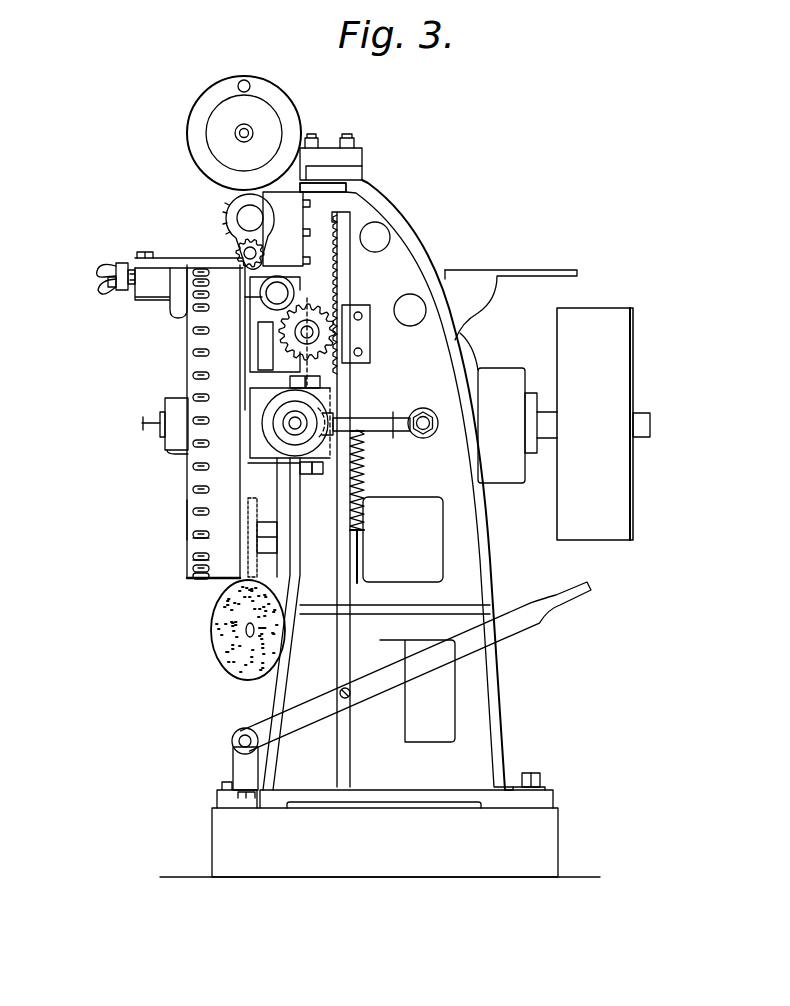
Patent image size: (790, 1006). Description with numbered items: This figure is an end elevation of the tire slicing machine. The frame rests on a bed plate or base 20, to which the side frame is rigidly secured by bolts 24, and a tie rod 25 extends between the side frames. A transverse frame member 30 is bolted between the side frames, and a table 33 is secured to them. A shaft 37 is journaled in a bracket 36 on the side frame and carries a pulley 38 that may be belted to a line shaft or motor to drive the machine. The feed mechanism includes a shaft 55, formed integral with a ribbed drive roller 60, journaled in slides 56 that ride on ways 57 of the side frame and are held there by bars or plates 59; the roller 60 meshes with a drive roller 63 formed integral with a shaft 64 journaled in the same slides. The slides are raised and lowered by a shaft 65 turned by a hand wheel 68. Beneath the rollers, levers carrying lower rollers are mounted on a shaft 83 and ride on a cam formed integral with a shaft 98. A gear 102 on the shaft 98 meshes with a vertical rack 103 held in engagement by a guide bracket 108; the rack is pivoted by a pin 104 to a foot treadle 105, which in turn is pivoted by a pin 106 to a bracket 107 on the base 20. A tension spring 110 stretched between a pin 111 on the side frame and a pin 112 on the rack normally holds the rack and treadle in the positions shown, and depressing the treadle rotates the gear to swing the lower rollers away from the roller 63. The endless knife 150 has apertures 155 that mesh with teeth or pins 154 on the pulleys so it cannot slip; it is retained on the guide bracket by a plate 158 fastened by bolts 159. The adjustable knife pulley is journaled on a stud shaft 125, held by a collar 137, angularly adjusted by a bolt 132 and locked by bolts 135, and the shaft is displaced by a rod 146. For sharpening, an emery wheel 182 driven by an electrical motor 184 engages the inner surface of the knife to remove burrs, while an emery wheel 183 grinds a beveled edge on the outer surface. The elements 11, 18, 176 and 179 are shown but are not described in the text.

The base 20 is at (413, 858).
The bolts 24 is at (528, 773).
The bracket 107 is at (242, 760).
The pin 106 is at (245, 728).
The foot treadle 105 is at (427, 657).
The pin 104 is at (340, 690).
The emery wheel 183 is at (214, 638).
The apertures 155 is at (195, 327).
The knife 150 is at (187, 518).
The teeth or pins 154 is at (202, 557).
The plate 158 is at (170, 257).
The bolts 159 is at (146, 253).
The nut 176 is at (124, 264).
The wing screw 18 is at (108, 270).
The screw shank 179 is at (108, 284).
The stud shaft 125 is at (165, 410).
The collar 137 is at (177, 450).
The bar 11 is at (265, 419).
The shaft 83 is at (245, 297).
The hand wheel 68 is at (284, 99).
The shaft 65 is at (243, 125).
The shaft 64 is at (323, 150).
The ways 57 is at (298, 187).
The slides 56 is at (296, 222).
The ribbed drive roller 60 is at (229, 225).
The shaft 55 is at (239, 216).
The drive roller 63 is at (238, 262).
The bars or plates 59 is at (307, 253).
The rack 103 is at (292, 285).
The transverse frame member 30 is at (262, 348).
The gear 102 is at (300, 306).
The shaft 98 is at (313, 327).
The guide bracket 108 is at (362, 311).
The bolts 135 is at (322, 488).
The rod 146 is at (320, 418).
The bolt 132 is at (335, 426).
The electrical motor 184 is at (277, 492).
The emery wheel 182 is at (263, 497).
The tie rod 25 is at (424, 413).
The tension spring 110 is at (366, 478).
The pin 111 is at (372, 432).
The pin 112 is at (365, 531).
The table 33 is at (549, 271).
The bracket 36 is at (528, 394).
The pulley 38 is at (626, 399).
The shaft 37 is at (648, 416).